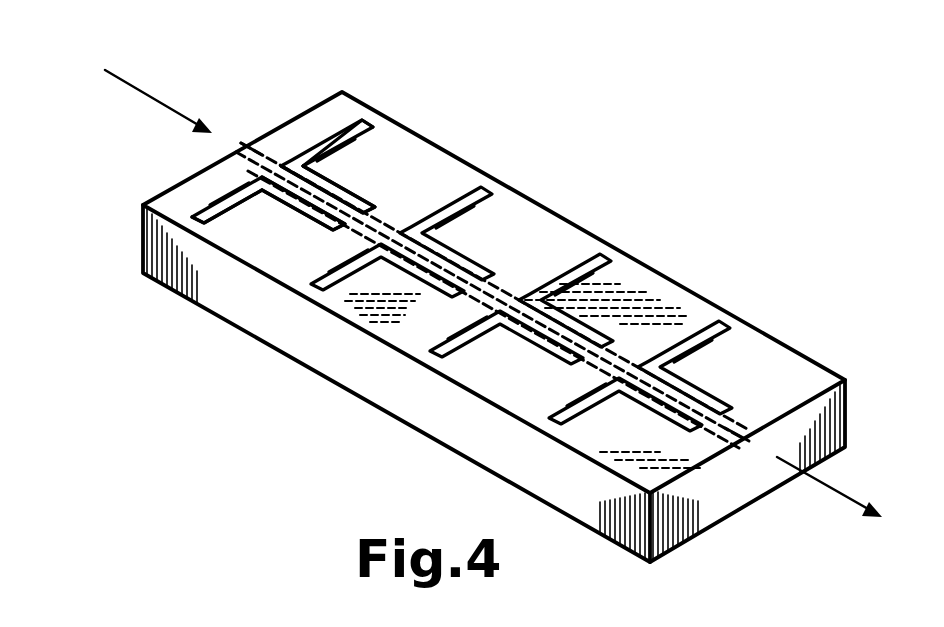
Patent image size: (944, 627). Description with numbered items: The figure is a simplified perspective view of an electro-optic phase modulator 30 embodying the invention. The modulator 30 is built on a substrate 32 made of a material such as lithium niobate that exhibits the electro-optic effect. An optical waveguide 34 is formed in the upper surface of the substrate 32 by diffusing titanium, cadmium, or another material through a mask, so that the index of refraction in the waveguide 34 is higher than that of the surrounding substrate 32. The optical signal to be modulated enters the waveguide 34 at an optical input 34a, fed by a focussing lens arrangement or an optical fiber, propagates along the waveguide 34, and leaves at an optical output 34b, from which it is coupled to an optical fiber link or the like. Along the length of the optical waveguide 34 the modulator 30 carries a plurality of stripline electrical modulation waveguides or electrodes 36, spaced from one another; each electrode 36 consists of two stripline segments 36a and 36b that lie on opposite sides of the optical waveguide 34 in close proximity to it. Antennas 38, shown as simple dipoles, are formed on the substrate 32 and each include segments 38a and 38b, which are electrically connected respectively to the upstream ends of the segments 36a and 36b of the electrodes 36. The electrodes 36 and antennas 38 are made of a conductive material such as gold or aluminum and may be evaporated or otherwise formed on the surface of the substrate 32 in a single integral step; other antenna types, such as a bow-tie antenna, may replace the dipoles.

The electro-optic phase modulator 30 is at (716, 251).
The substrate 32 is at (760, 325).
The optical waveguide 34 is at (503, 292).
The optical input 34a is at (243, 146).
The optical output 34b is at (744, 440).
The stripline electrical modulation waveguides or electrodes 36 is at (375, 160).
The stripline segment 36a is at (385, 196).
The stripline segment 36b is at (308, 212).
The antennas 38 is at (203, 192).
The antenna segment 38a is at (365, 120).
The antenna segment 38b is at (201, 222).